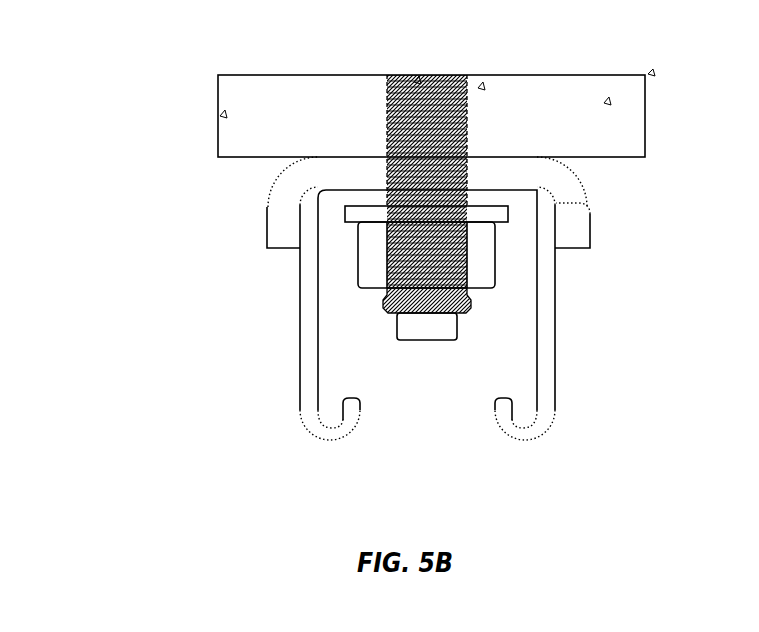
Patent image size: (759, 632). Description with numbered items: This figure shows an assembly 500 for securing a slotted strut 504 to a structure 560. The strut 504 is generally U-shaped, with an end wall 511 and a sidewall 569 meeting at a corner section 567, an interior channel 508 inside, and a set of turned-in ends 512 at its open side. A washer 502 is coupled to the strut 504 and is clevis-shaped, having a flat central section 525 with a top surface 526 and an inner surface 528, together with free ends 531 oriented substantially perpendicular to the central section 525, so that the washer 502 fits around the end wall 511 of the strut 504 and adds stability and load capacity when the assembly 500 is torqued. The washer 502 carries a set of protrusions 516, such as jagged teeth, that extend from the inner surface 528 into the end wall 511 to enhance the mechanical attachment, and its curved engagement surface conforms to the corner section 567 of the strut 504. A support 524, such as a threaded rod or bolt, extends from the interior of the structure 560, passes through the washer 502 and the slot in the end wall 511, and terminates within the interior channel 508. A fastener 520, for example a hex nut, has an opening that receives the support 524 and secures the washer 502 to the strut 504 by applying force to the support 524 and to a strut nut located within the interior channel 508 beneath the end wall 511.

The assembly 500 is at (142, 93).
The washer 502 is at (600, 230).
The strut 504 is at (566, 385).
The interior channel 508 is at (335, 336).
The end wall 511 is at (505, 197).
The turned-in ends 512 is at (353, 408).
The protrusions 516 is at (290, 194).
The fastener 520 is at (368, 264).
The support 524 is at (475, 301).
The flat central section 525 is at (330, 167).
The top surface 526 is at (373, 158).
The inner surface 528 is at (342, 191).
The free ends 531 is at (275, 239).
The structure 560 is at (632, 102).
The corner section 567 is at (547, 198).
The sidewall 569 is at (308, 296).